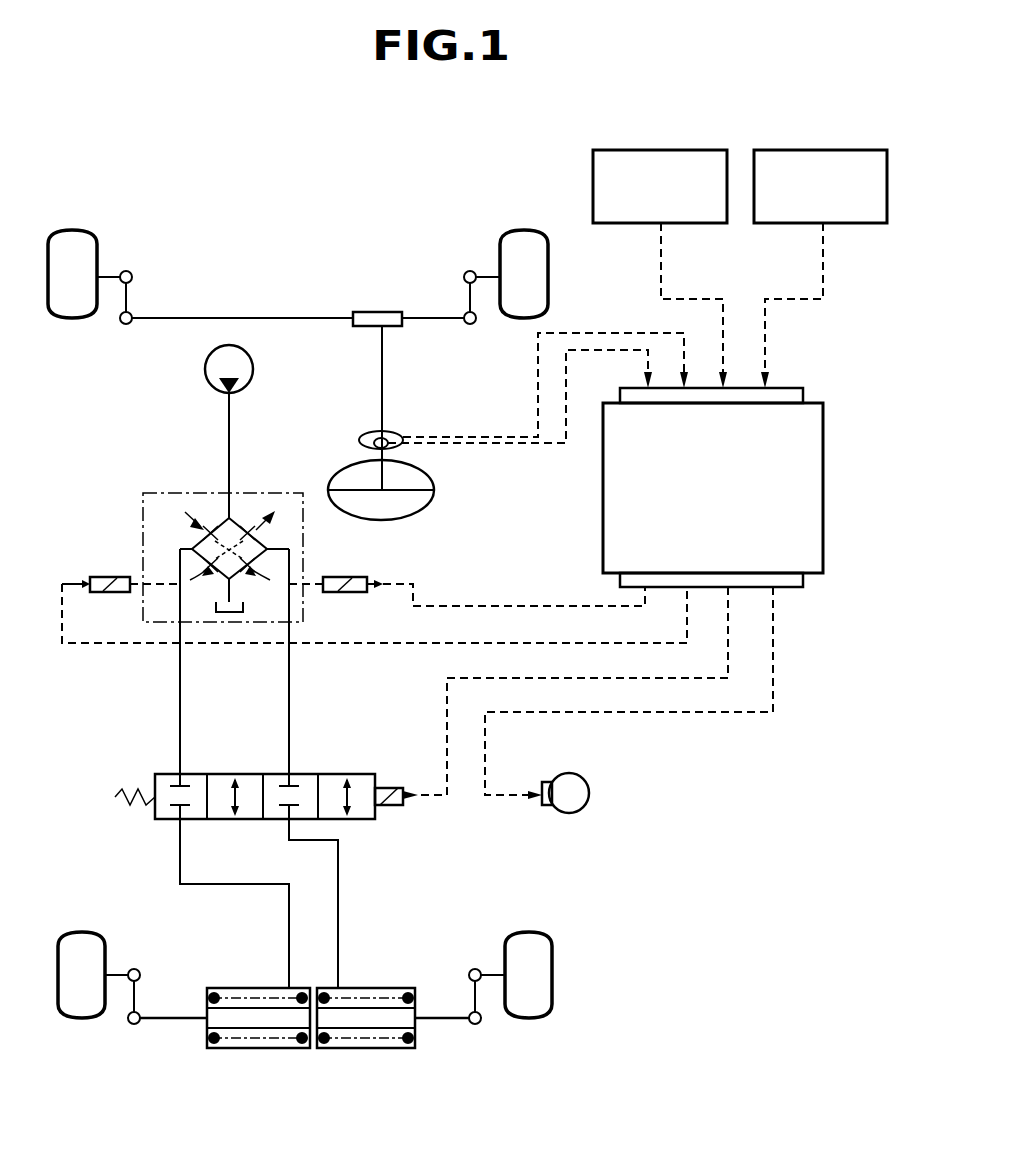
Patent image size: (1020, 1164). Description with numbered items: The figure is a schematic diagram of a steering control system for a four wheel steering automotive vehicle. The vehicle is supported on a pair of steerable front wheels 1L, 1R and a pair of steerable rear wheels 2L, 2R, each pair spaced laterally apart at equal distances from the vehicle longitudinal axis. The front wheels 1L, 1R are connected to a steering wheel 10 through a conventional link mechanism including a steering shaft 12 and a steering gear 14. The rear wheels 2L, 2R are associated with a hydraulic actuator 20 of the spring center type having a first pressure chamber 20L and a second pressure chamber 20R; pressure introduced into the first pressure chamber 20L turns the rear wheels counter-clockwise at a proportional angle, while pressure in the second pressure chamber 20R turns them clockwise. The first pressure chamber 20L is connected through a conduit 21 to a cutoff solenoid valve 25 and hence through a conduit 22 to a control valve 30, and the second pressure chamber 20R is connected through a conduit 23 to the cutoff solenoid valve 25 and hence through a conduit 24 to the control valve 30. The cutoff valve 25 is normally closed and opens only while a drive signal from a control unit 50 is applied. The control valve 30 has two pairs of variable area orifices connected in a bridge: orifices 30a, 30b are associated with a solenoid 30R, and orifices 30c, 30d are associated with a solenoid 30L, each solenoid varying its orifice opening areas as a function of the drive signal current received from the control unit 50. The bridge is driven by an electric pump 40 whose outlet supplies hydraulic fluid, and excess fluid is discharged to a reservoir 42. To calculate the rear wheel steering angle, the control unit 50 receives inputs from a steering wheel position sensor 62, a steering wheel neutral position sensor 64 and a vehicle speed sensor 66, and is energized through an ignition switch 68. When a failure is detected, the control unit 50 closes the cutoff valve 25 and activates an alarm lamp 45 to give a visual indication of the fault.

The steerable front wheel 1L is at (80, 232).
The steerable front wheel 1R is at (522, 232).
The steering gear 14 is at (372, 312).
The steering shaft 12 is at (382, 355).
The steering wheel 10 is at (434, 490).
The steering wheel neutral position sensor 64 is at (375, 436).
The steering wheel position sensor 62 is at (396, 438).
The vehicle speed sensor 66 is at (670, 150).
The ignition switch 68 is at (836, 150).
The control unit 50 is at (823, 436).
The electric pump 40 is at (205, 364).
The control valve 30 is at (145, 493).
The variable area orifice 30a is at (205, 526).
The variable area orifice 30b is at (256, 574).
The variable area orifice 30c is at (207, 572).
The variable area orifice 30d is at (254, 526).
The solenoid 30L is at (105, 577).
The solenoid 30R is at (352, 577).
The reservoir 42 is at (235, 614).
The conduit 22 is at (180, 703).
The conduit 24 is at (289, 703).
The cutoff solenoid valve 25 is at (338, 774).
The alarm lamp 45 is at (587, 783).
The conduit 21 is at (180, 862).
The conduit 23 is at (338, 892).
The hydraulic actuator 20 is at (304, 1018).
The first pressure chamber 20L is at (243, 996).
The second pressure chamber 20R is at (378, 996).
The steerable rear wheel 2L is at (86, 1020).
The steerable rear wheel 2R is at (528, 1020).